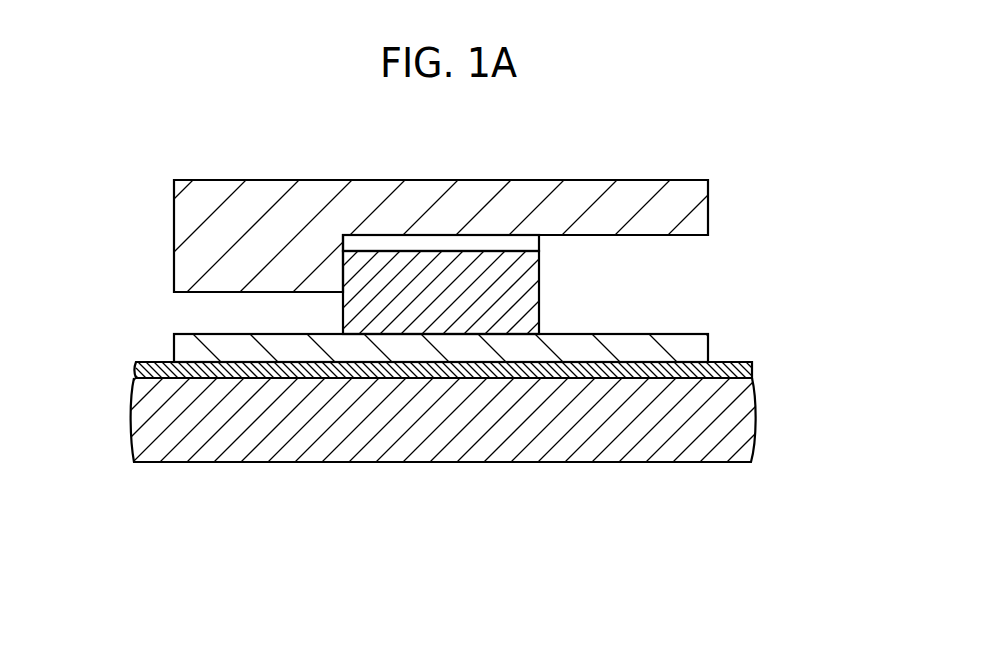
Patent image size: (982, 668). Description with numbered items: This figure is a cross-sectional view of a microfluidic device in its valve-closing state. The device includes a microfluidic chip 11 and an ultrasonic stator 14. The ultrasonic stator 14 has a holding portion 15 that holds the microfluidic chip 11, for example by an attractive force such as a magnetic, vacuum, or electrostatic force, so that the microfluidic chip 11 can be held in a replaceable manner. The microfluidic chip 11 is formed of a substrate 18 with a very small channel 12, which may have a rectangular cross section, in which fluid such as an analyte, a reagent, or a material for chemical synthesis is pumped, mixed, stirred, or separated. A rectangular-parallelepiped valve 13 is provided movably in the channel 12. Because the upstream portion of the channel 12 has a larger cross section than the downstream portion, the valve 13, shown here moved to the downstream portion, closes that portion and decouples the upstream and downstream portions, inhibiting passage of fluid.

The microfluidic chip 11 is at (113, 180).
The channel 12 is at (698, 283).
The valve 13 is at (491, 290).
The ultrasonic stator 14 is at (746, 428).
The holding portion 15 is at (753, 363).
The substrate 18 is at (648, 187).